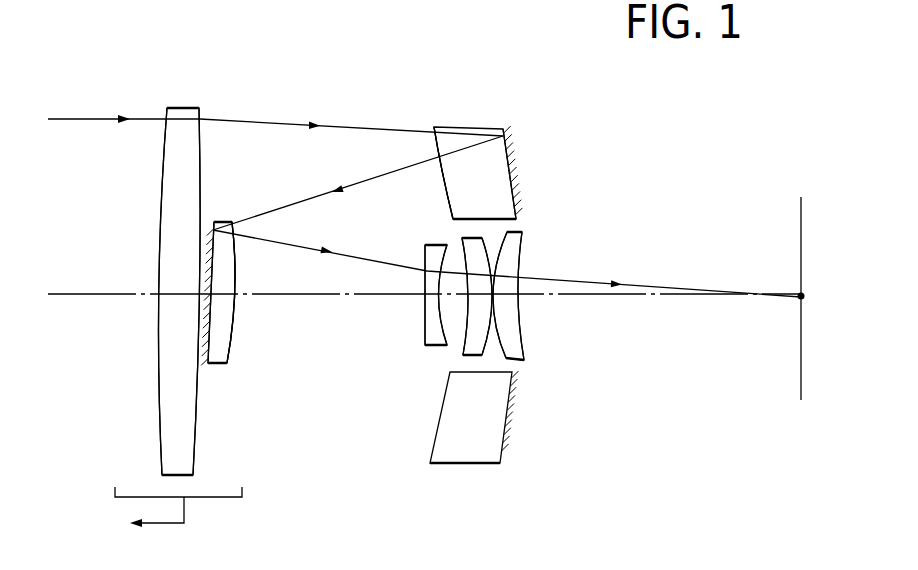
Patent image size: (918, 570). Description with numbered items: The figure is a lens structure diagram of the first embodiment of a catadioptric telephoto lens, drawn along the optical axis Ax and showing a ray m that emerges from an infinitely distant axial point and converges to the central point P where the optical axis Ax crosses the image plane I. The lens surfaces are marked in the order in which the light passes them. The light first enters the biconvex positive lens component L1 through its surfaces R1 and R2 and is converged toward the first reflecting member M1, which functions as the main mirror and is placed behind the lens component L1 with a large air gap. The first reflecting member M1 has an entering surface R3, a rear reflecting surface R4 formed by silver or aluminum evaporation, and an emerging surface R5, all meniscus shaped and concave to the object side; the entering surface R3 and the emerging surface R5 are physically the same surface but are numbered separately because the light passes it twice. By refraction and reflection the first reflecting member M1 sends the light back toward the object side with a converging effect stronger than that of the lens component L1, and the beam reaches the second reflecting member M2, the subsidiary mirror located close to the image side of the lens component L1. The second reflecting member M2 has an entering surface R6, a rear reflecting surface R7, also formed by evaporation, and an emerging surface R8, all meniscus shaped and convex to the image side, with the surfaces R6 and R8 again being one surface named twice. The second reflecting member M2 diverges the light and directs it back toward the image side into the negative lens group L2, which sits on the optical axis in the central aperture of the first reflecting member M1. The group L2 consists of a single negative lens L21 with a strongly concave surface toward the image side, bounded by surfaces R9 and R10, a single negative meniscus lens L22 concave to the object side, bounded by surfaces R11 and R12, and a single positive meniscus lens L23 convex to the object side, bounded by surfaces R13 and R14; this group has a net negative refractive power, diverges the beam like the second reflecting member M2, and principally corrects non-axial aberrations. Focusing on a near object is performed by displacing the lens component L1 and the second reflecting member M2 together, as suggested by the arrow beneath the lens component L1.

The ray m is at (90, 118).
The optical axis Ax is at (88, 292).
The biconvex positive lens component L1 is at (183, 107).
The first lens surface R1 is at (157, 420).
The second lens surface R2 is at (196, 420).
The first reflecting member M1 is at (468, 126).
The entering surface R3 is at (445, 196).
The emerging surface R5 is at (410, 182).
The rear reflecting surface R4 is at (516, 180).
The second reflecting member M2 is at (225, 220).
The entering surface R6 is at (237, 325).
The emerging surface R8 is at (231, 292).
The rear reflecting surface R7 is at (213, 345).
The negative lens group L2 is at (470, 391).
The first negative lens L21 is at (430, 320).
The second negative lens L22 is at (478, 325).
The positive lens L23 is at (507, 305).
The lens surface R9 is at (423, 350).
The lens surface R10 is at (440, 345).
The lens surface R11 is at (464, 355).
The lens surface R12 is at (484, 350).
The lens surface R13 is at (504, 345).
The lens surface R14 is at (553, 368).
The image plane I is at (800, 222).
The central point P is at (799, 293).